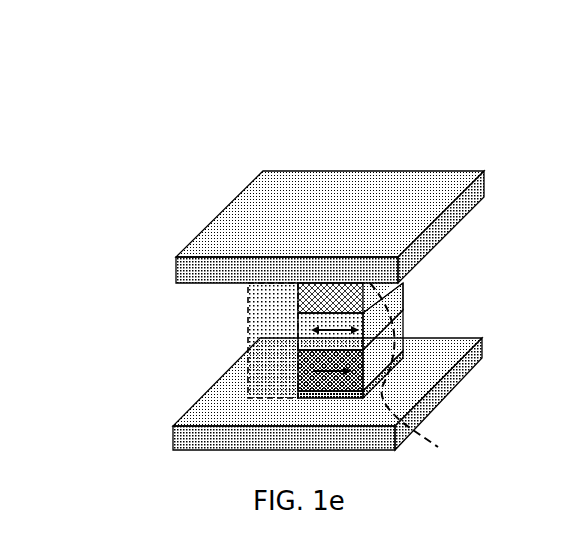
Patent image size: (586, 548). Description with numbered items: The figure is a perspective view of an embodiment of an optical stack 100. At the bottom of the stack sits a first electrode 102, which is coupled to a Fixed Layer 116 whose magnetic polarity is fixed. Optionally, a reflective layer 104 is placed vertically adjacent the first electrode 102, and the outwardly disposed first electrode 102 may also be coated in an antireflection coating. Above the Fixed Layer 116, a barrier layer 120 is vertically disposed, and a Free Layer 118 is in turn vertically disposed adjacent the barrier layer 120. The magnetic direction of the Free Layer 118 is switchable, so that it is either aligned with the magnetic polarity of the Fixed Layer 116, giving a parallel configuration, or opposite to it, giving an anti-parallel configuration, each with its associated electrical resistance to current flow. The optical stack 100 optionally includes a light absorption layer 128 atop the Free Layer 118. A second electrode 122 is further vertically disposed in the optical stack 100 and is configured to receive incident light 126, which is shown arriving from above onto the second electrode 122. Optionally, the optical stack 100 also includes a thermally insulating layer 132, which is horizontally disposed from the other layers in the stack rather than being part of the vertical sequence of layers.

The optical stack 100 is at (171, 120).
The first electrode 102 is at (440, 377).
The reflective layer 104 is at (400, 347).
The Fixed Layer 116 is at (405, 335).
The Free Layer 118 is at (408, 279).
The barrier layer 120 is at (410, 297).
The second electrode 122 is at (485, 183).
The incident light 126 is at (317, 192).
The light absorption layer 128 is at (419, 374).
The thermally insulating layer 132 is at (248, 319).